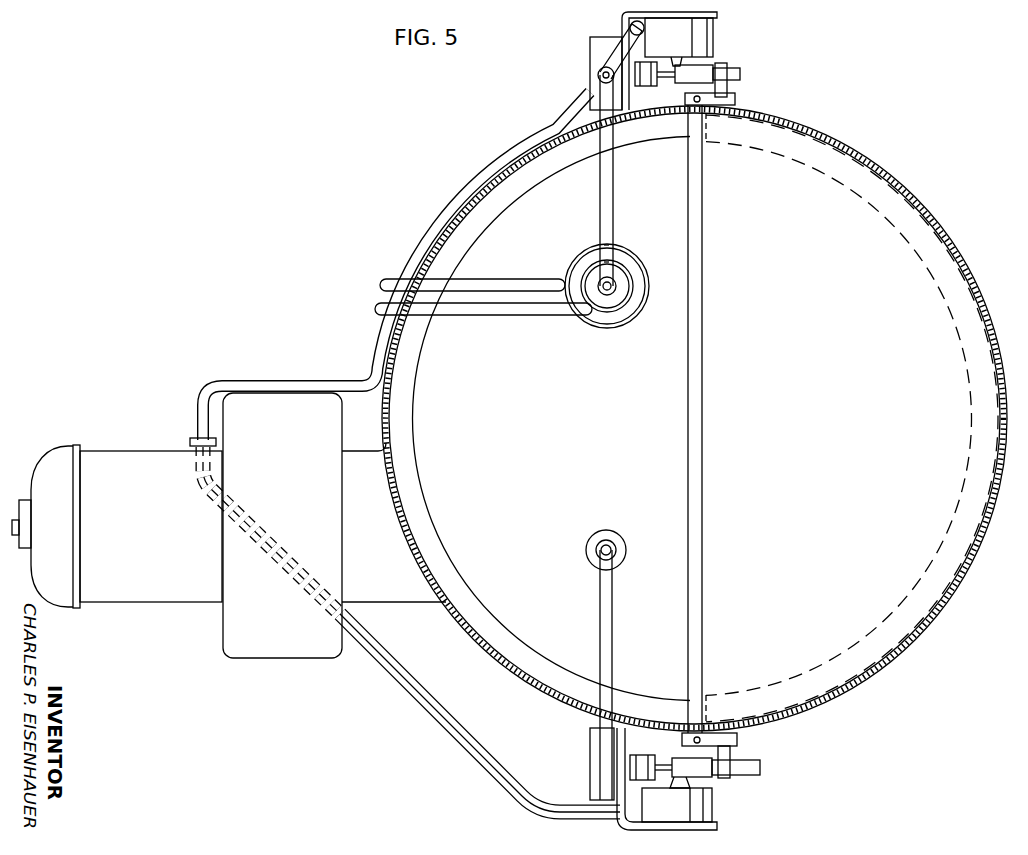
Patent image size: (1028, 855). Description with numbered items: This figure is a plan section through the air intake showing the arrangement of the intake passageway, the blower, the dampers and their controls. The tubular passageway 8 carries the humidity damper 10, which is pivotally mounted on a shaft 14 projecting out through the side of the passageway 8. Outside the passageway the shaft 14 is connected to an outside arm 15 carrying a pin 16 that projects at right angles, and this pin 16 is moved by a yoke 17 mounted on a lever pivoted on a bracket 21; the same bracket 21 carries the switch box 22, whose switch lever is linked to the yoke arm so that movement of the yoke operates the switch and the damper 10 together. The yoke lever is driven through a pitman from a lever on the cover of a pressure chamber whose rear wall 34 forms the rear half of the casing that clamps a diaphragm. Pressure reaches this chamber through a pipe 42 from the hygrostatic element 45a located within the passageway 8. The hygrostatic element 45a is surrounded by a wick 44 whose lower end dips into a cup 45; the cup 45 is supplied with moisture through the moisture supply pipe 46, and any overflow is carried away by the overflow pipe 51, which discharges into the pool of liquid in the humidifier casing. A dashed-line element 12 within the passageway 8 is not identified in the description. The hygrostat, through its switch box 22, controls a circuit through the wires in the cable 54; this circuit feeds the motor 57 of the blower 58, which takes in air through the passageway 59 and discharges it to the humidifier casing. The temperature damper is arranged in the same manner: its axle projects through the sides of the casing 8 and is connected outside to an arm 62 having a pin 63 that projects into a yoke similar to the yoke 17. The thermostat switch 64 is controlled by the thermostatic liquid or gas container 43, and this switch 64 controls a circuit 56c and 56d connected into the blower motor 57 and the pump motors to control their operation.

The passageway 8 is at (938, 208).
The humidity damper 10 is at (928, 293).
The inner wall 12 is at (968, 378).
The shaft 14 is at (703, 376).
The outside arm 15 is at (740, 100).
The pin 16 is at (732, 87).
The yoke 17 is at (740, 72).
The bracket 21 is at (626, 17).
The switch box 22 is at (718, 26).
The rear wall 34 is at (590, 53).
The pipe 42 is at (614, 186).
The thermostatic liquid or gas container 43 is at (592, 546).
The wick 44 is at (622, 270).
The cup 45 is at (641, 313).
The hygrostatic element 45a is at (592, 268).
The moisture supply pipe 46 is at (490, 318).
The overflow pipe 51 is at (527, 284).
The cable 54 is at (318, 380).
The circuit 56c is at (406, 692).
The circuit 56d is at (436, 702).
The motor 57 is at (145, 590).
The blower 58 is at (283, 412).
The passageway 59 is at (388, 590).
The arm 62 is at (740, 735).
The pin 63 is at (735, 752).
The thermostat switch 64 is at (715, 813).